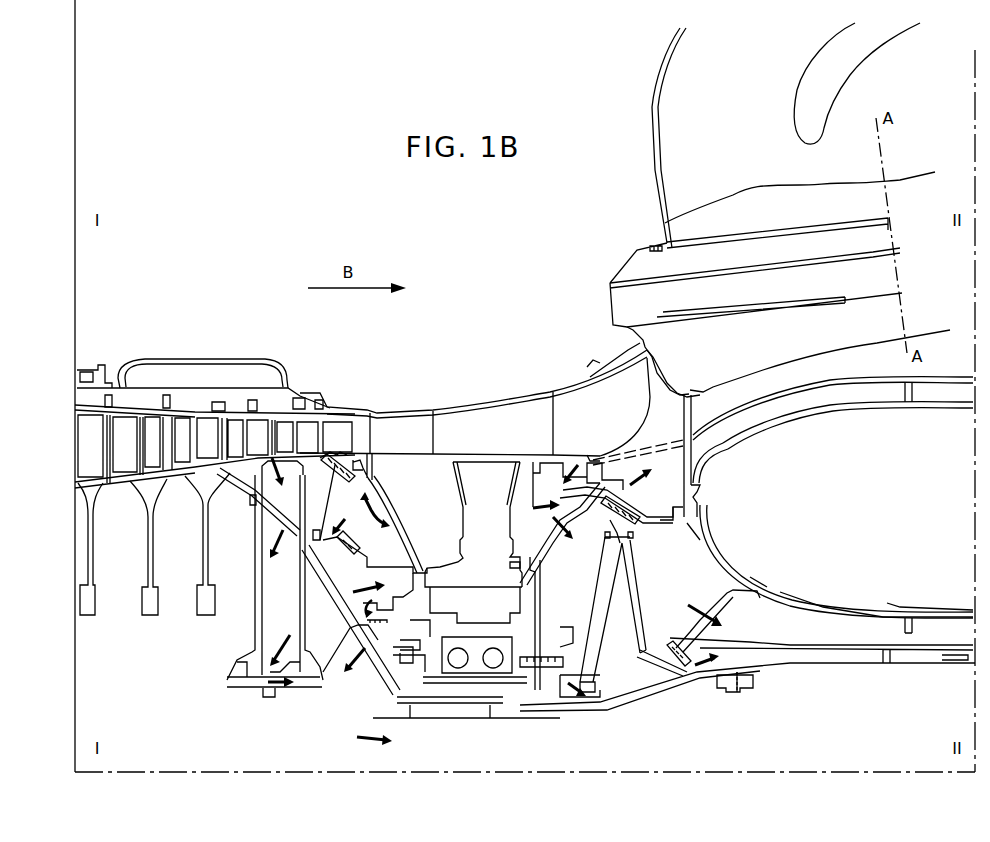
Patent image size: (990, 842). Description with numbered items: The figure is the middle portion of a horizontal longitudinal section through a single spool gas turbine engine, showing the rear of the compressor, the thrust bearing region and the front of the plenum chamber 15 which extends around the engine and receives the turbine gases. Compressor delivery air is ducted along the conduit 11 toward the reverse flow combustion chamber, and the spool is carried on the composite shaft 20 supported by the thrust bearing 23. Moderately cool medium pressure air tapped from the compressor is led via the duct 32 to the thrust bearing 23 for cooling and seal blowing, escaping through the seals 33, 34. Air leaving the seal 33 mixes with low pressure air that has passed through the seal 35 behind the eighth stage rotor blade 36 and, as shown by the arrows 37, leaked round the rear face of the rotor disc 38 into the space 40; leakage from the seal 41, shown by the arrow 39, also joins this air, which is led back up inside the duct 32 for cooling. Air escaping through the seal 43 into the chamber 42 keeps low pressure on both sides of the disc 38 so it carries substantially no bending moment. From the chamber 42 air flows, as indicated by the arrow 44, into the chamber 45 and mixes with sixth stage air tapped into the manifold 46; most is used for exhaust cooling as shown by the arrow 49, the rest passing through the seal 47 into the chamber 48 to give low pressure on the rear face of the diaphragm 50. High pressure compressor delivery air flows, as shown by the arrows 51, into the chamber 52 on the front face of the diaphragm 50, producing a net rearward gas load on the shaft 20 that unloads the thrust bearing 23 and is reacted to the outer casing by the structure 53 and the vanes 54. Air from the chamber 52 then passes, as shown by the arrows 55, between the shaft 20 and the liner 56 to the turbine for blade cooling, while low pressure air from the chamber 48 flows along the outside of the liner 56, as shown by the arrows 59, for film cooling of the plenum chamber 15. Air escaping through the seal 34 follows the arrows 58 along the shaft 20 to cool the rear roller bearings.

The conduit 11 is at (611, 422).
The plenum chamber 15 is at (866, 503).
The composite shaft 20 is at (615, 711).
The thrust bearing 23 is at (450, 662).
The duct 32 is at (487, 524).
The seal 33 is at (388, 598).
The seal 34 is at (393, 653).
The seal 35 is at (260, 470).
The eighth stage rotor blade 36 is at (255, 437).
The arrows 37 is at (293, 634).
The rotor disc 38 is at (303, 590).
The arrow 39 is at (343, 521).
The space 40 is at (328, 571).
The seal 41 is at (357, 547).
The chamber 42 is at (356, 505).
The seal 43 is at (330, 475).
The arrow 44 is at (370, 503).
The chamber 45 is at (442, 506).
The manifold 46 is at (200, 358).
The seal 47 is at (605, 513).
The chamber 48 is at (689, 568).
The arrow 49 is at (543, 500).
The diaphragm 50 is at (635, 607).
The arrows 51 is at (553, 540).
The chamber 52 is at (594, 588).
The structure 53 is at (546, 607).
The vanes 54 is at (484, 432).
The arrows 55 is at (733, 655).
The liner 56 is at (828, 640).
The arrows 58 is at (383, 746).
The arrows 59 is at (720, 625).